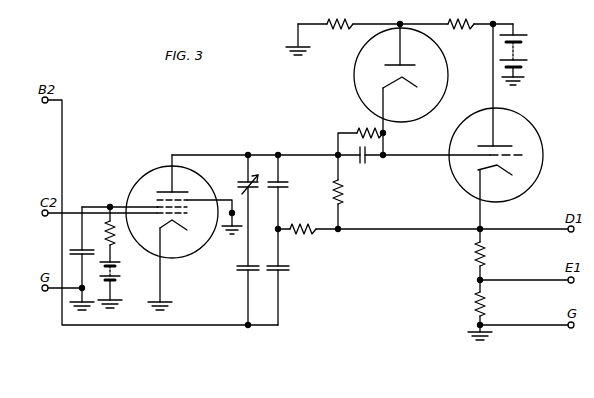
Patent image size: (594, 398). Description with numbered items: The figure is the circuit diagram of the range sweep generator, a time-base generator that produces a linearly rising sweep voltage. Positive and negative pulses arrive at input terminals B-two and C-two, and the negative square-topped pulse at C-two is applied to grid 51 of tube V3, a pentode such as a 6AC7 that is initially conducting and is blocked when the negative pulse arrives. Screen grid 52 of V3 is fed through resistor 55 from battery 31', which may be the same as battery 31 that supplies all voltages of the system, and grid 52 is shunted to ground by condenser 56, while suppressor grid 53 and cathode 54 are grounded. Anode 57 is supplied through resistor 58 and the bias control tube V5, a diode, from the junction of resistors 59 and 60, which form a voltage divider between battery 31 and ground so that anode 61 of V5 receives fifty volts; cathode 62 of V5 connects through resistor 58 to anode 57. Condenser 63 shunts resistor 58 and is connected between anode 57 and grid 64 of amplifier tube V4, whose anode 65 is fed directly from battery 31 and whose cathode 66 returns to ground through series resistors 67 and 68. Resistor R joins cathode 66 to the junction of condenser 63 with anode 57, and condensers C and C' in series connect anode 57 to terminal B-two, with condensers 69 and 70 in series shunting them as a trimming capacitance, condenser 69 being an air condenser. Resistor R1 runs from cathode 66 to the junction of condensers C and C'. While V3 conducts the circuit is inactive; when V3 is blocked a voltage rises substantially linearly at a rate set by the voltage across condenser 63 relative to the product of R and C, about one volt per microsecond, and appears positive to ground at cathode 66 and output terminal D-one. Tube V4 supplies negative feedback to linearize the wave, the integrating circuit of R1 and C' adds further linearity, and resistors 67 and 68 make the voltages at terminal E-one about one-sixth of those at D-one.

The battery 31 is at (534, 53).
The battery 31' is at (131, 284).
The grid 51 is at (190, 218).
The screen grid 52 is at (158, 201).
The suppressor grid 53 is at (188, 199).
The cathode 54 is at (171, 234).
The resistor 55 is at (107, 228).
The condenser 56 is at (70, 249).
The anode 57 is at (170, 190).
The resistor 58 is at (357, 129).
The resistor 59 is at (331, 20).
The resistor 60 is at (450, 20).
The anode 61 is at (388, 64).
The cathode 62 is at (417, 82).
The condenser 63 is at (366, 165).
The grid 64 is at (518, 158).
The anode 65 is at (479, 144).
The cathode 66 is at (479, 169).
The resistor 67 is at (486, 257).
The resistor 68 is at (486, 302).
The condenser 69 is at (251, 190).
The condenser 70 is at (237, 266).
The tube V3 is at (141, 187).
The tube V4 is at (543, 141).
The bias control tube V5 is at (356, 80).
The condenser C is at (287, 210).
The condenser C' is at (288, 295).
The resistor R is at (347, 188).
The resistor R1 is at (301, 236).